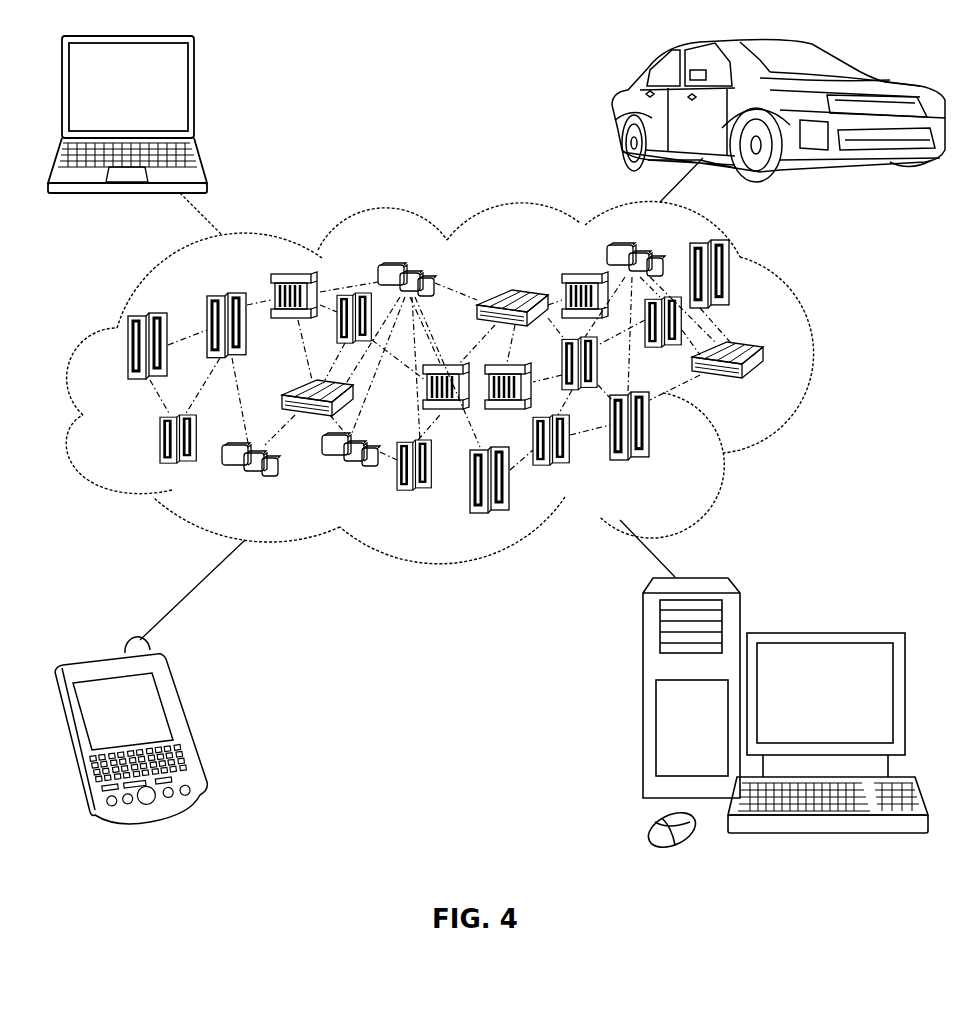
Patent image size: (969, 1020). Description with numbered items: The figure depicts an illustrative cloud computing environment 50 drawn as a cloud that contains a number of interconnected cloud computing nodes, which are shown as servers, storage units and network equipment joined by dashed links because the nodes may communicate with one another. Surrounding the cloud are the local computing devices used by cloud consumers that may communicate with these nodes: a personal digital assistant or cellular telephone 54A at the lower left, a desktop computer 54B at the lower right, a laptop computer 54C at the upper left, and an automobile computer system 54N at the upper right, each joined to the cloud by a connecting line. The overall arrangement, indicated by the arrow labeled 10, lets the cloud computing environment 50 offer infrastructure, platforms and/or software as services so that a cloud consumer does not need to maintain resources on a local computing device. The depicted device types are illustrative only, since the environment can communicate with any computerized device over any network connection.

The cloud computing environment 10 is at (770, 385).
The cloud computing environment 50 is at (829, 357).
The personal digital assistant or cellular telephone 54A is at (186, 724).
The desktop computer 54B is at (824, 633).
The laptop computer 54C is at (198, 96).
The automobile computer system 54N is at (613, 110).